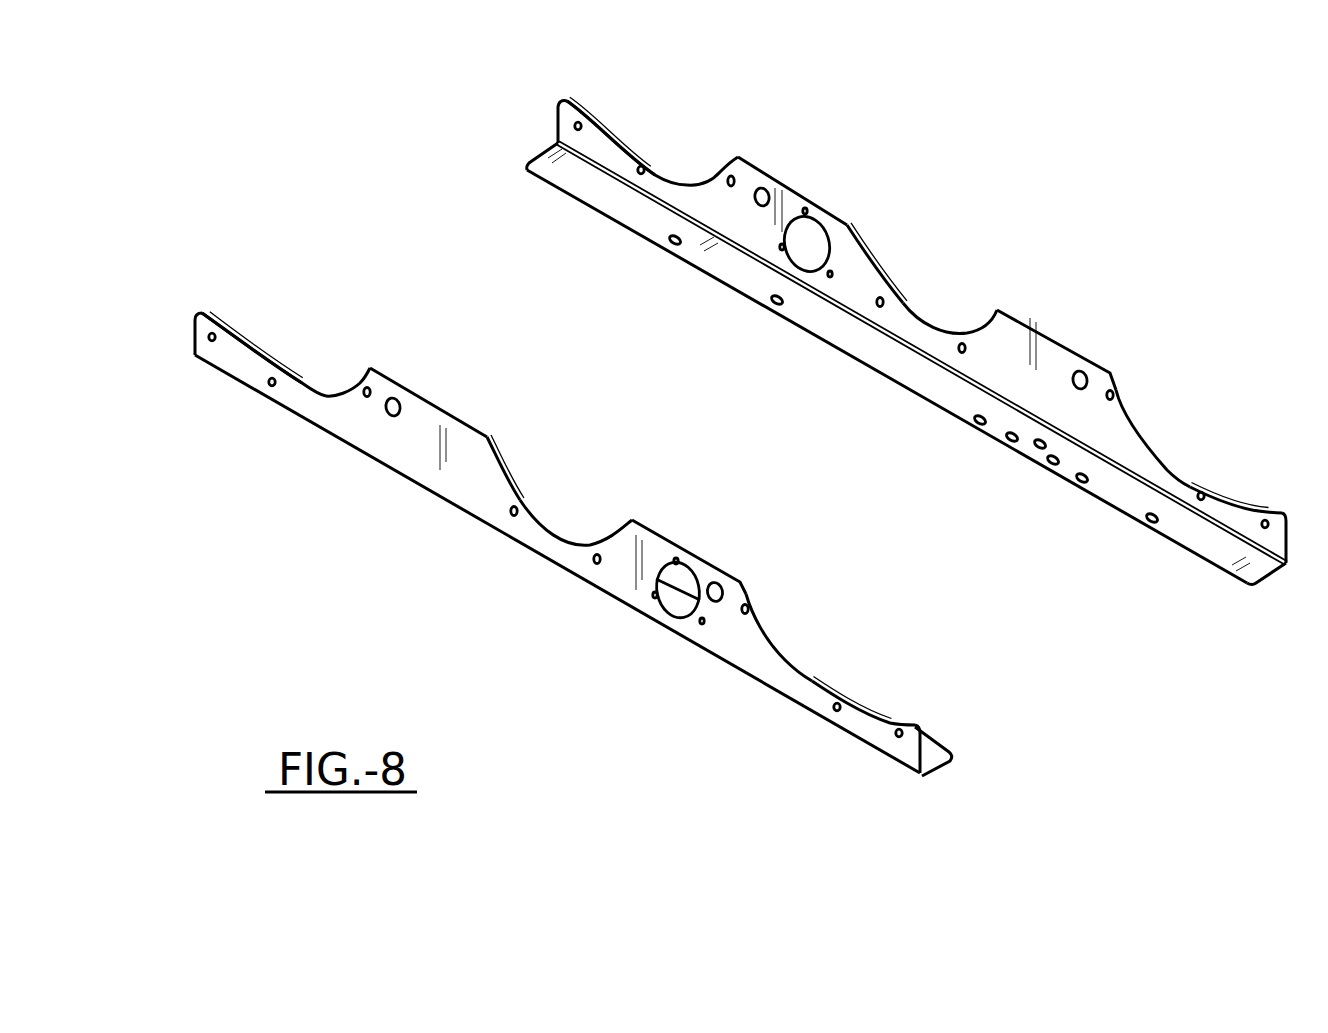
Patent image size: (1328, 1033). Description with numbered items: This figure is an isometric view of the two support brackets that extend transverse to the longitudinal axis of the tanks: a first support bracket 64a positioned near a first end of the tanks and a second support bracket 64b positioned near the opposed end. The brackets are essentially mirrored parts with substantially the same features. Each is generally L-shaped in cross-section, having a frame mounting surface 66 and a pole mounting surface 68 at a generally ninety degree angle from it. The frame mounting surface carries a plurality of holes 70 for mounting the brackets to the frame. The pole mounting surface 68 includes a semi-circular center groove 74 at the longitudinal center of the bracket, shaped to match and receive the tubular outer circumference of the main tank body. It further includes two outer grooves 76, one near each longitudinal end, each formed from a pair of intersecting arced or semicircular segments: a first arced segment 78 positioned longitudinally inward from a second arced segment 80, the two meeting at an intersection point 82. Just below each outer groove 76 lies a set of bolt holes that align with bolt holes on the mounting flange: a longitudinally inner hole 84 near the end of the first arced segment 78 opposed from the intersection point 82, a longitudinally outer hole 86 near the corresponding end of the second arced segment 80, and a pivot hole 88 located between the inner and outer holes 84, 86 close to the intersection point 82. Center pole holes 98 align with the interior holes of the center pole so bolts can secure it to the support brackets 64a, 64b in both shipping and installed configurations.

The first support bracket 64a is at (958, 776).
The second support bracket 64b is at (848, 203).
The frame mounting surface 66 is at (907, 392).
The pole mounting surface 68 is at (1008, 325).
The holes 70 is at (662, 250).
The center groove 74 is at (867, 257).
The outer grooves 76 is at (628, 139).
The first arced segment 78 is at (712, 178).
The second arced segment 80 is at (583, 110).
The intersection point 82 is at (643, 160).
The longitudinally inner hole 84 is at (733, 178).
The longitudinally outer hole 86 is at (577, 125).
The pivot hole 88 is at (637, 170).
The center pole holes 98 is at (960, 347).